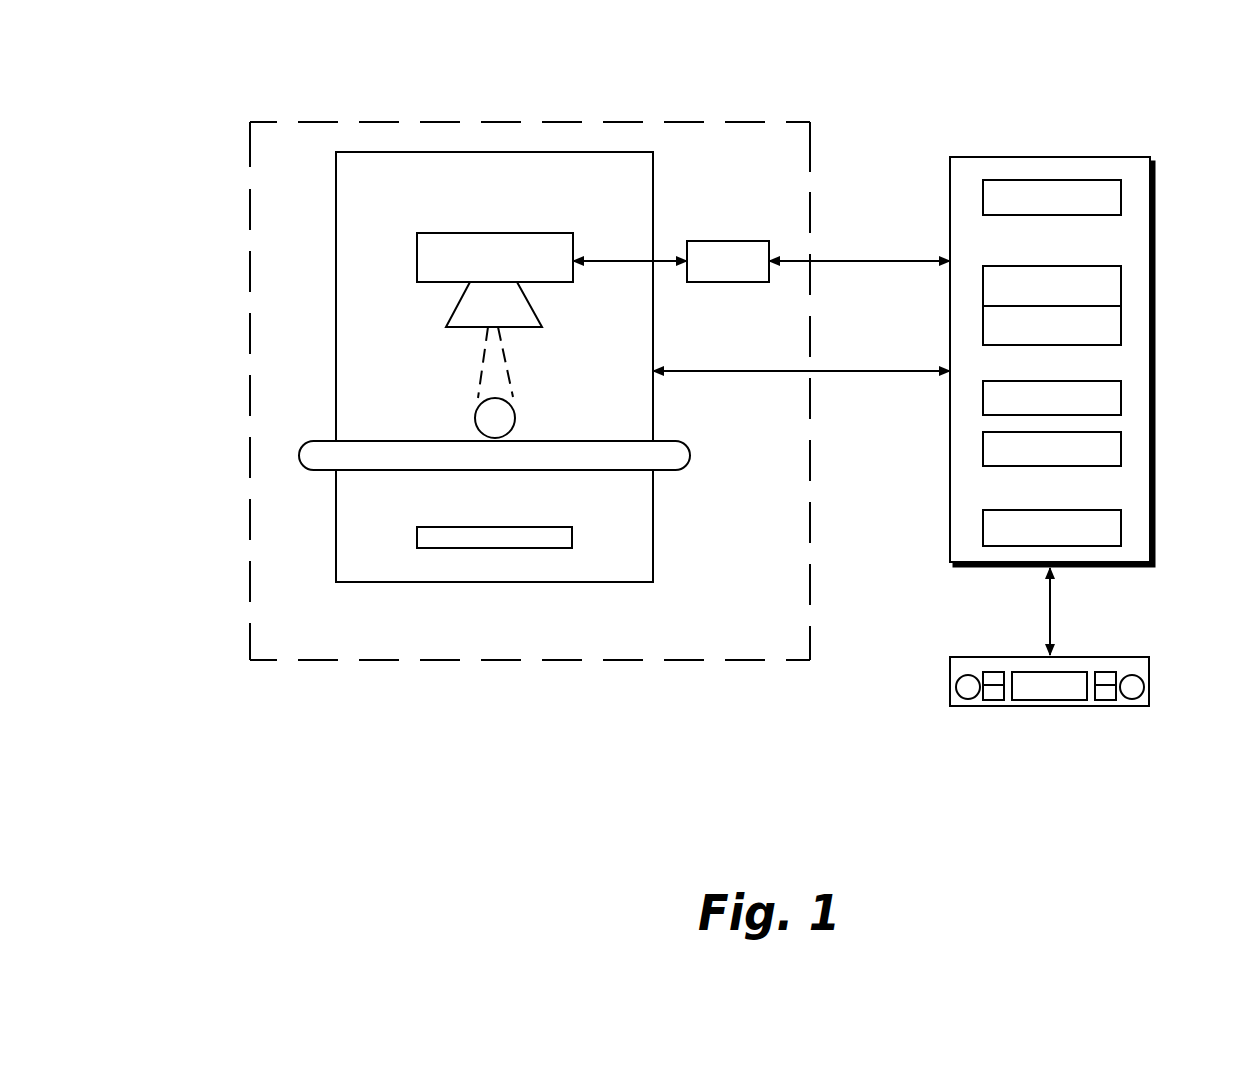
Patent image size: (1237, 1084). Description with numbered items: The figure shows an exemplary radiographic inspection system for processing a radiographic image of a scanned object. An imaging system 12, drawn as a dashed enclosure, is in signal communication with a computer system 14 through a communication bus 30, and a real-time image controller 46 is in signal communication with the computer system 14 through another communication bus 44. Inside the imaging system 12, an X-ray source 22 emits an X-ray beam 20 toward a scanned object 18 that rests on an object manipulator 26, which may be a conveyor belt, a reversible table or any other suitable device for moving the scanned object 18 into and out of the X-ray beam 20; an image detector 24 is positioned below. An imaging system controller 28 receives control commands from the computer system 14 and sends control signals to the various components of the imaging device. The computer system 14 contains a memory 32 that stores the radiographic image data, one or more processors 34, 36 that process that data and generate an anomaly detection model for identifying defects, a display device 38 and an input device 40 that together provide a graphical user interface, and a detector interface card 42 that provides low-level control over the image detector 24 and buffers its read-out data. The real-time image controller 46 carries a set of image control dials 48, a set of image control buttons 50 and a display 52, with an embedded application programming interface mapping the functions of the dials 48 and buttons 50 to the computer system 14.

The imaging system 12 is at (337, 122).
The computer system 14 is at (1023, 158).
The scanned object 18 is at (485, 424).
The X-ray beam 20 is at (482, 370).
The X-ray source 22 is at (417, 260).
The image detector 24 is at (513, 542).
The object manipulator 26 is at (319, 455).
The imaging system controller 28 is at (712, 240).
The communication bus 30 is at (862, 261).
The memory 32 is at (1121, 205).
The processor 34 is at (1121, 288).
The processor 36 is at (1121, 324).
The display device 38 is at (1121, 401).
The input device 40 is at (1121, 459).
The detector interface card 42 is at (1121, 527).
The communication bus 44 is at (1050, 600).
The real-time image controller 46 is at (1149, 668).
The image control dials 48 is at (956, 682).
The image control buttons 50 is at (985, 700).
The display 52 is at (1020, 672).